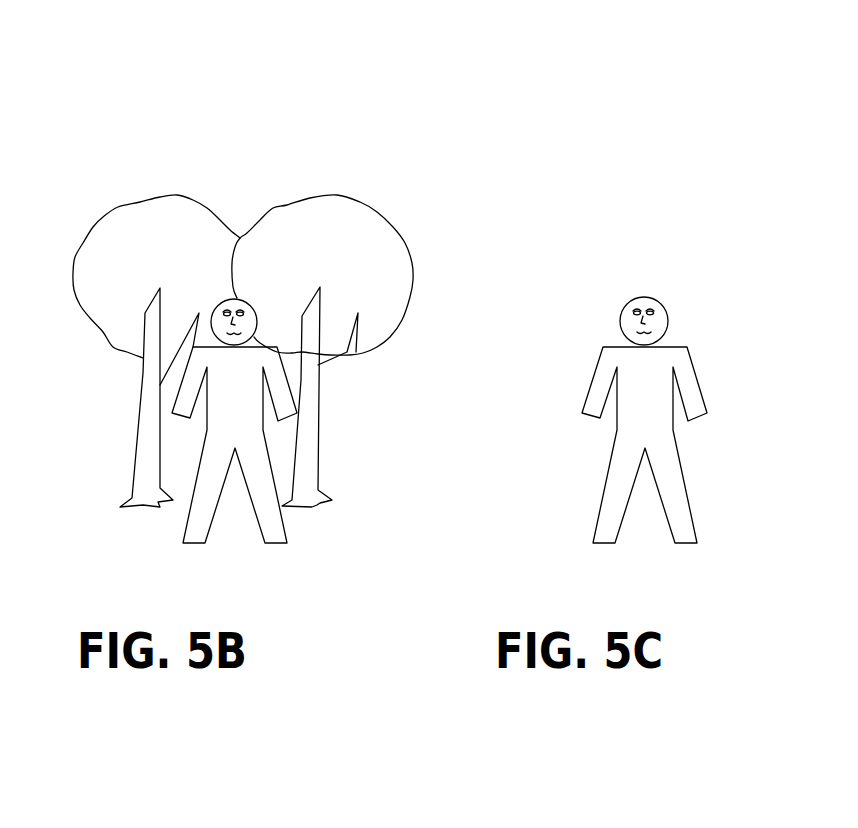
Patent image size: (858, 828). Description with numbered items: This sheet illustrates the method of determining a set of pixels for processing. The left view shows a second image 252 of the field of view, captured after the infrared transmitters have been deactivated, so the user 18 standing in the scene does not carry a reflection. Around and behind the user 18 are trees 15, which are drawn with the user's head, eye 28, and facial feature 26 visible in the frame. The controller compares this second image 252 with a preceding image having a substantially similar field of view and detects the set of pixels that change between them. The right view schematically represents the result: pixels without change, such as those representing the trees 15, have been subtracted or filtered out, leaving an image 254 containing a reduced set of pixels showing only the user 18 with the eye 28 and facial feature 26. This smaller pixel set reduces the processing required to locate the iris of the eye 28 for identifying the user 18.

In FIG. 5B, the second image 252 is at (252, 168).
In FIG. 5C, the image 254 is at (672, 268).
In FIG. 5B, the trees 15 is at (345, 245).
In FIG. 5B, the user 18 is at (238, 392).
In FIG. 5C, the user 18 is at (650, 405).
In FIG. 5B, the eye 28 is at (218, 308).
In FIG. 5C, the eye 28 is at (631, 307).
In FIG. 5B, the facial feature 26 is at (232, 334).
In FIG. 5C, the facial feature 26 is at (651, 333).